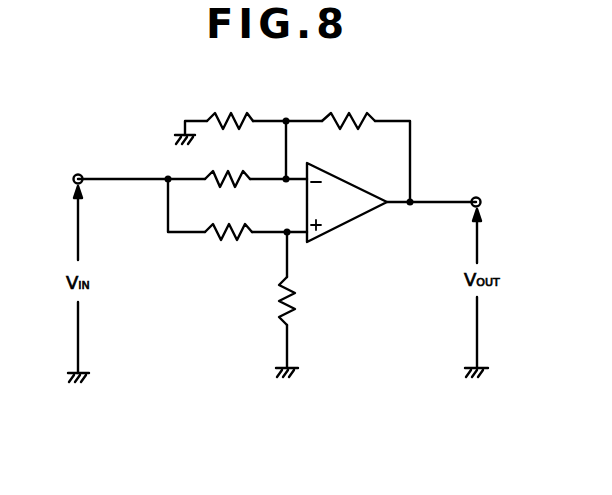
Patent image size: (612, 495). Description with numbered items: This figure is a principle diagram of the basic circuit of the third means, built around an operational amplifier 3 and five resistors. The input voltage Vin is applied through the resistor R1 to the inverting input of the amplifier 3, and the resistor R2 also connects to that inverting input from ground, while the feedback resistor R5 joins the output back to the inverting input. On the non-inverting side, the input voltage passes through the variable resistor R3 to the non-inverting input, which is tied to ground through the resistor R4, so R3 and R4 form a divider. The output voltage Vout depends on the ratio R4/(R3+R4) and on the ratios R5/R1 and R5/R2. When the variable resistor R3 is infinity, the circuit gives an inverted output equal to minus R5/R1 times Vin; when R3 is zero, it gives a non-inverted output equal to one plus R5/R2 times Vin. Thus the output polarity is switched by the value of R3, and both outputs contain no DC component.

The resistor R1 is at (227, 165).
The resistor R2 is at (230, 106).
The variable resistor R3 is at (228, 251).
The resistor R4 is at (299, 301).
The resistor R5 is at (348, 106).
The operational amplifier 3 is at (347, 215).